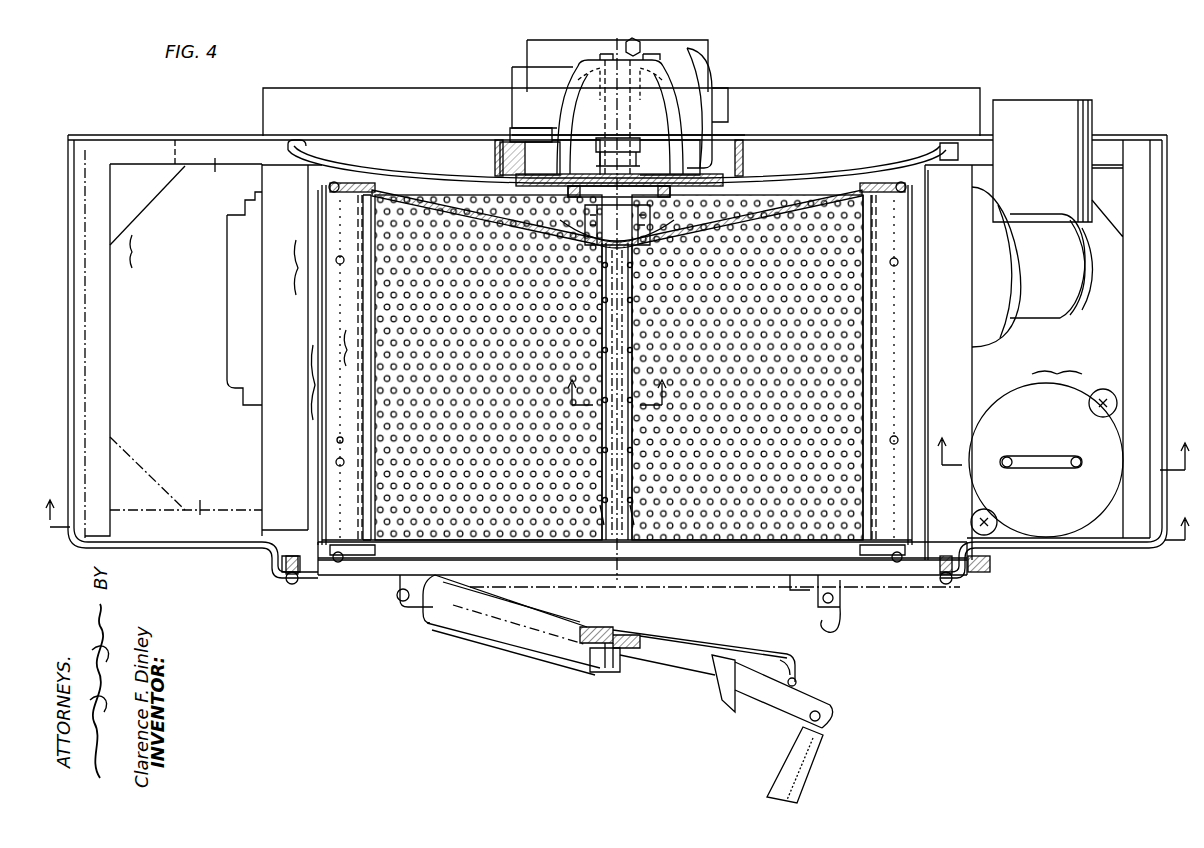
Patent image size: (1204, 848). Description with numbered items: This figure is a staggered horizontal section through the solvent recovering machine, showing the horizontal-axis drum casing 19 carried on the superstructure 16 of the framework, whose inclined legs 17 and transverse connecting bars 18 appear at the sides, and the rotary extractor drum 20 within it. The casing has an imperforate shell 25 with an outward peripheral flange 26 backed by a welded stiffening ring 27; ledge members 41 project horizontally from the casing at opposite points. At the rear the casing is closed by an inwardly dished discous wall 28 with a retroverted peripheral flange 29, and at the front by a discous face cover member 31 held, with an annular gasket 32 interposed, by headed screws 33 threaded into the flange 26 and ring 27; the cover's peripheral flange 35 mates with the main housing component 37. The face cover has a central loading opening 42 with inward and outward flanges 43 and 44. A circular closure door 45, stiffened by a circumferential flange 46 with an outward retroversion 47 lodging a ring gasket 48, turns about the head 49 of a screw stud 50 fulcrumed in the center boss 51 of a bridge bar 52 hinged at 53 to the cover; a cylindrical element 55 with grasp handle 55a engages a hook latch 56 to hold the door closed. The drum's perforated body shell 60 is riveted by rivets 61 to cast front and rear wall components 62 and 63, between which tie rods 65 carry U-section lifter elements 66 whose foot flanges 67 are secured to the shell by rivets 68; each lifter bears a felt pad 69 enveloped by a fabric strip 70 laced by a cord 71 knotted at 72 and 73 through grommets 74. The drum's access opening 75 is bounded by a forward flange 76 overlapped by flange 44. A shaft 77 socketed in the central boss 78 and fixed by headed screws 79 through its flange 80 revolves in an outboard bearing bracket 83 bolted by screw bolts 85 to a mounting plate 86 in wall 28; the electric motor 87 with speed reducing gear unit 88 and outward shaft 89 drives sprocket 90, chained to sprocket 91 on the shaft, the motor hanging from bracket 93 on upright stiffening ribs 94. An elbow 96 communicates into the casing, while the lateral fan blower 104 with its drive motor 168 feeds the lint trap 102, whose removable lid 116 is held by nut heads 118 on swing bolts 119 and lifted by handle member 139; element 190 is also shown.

The superstructure 16 is at (146, 251).
The inclined legs 17 is at (208, 336).
The transverse connecting bars 18 is at (110, 363).
The drum casing 19 is at (284, 267).
The rotary extractor drum 20 is at (306, 386).
The imperforate shell 25 is at (316, 336).
The peripheral flange 26 is at (272, 578).
The stiffening ring 27 is at (284, 555).
The dished discous wall 28 is at (814, 173).
The retroverted peripheral flange 29 is at (958, 153).
The face cover member 31 is at (338, 580).
The annular gasket 32 is at (298, 580).
The headed screws 33 is at (288, 583).
The peripheral flange 35 is at (982, 571).
The main component of machine housing 37 is at (68, 364).
The ledge members 41 is at (268, 438).
The central opening 42 is at (760, 588).
The inwardly projecting peripheral flange 43 is at (795, 566).
The outwardly projecting peripheral flange 44 is at (796, 590).
The closure door 45 is at (705, 638).
The circumferential flange 46 is at (796, 670).
The outward retroversion 47 is at (800, 684).
The ring gasket 48 is at (800, 676).
The head of screw stud 49 is at (612, 628).
The screw stud 50 is at (600, 668).
The center boss 51 is at (622, 672).
The bridge bar 52 is at (511, 632).
The hinge connection 53 is at (398, 610).
The cylindrical element 55 is at (832, 710).
The actuating grasp handle 55a is at (812, 769).
The hook latch 56 is at (843, 620).
The cylindric body shell 60 is at (320, 214).
The rivets 61 is at (330, 191).
The front wall component 62 is at (400, 538).
The rear wall component 63 is at (617, 367).
The tie rods 65 is at (365, 321).
The lifter elements 66 is at (590, 360).
The foot flanges 67 is at (362, 471).
The rivets 68 is at (336, 462).
The pad 69 is at (362, 321).
The covering fabric strip 70 is at (870, 307).
The lacing cord 71 is at (880, 411).
The knot 72 is at (890, 209).
The knot 73 is at (368, 536).
The grommets 74 is at (892, 263).
The access opening 75 is at (720, 540).
The forwardly projecting peripheral flange 76 is at (810, 540).
The shaft 77 is at (628, 104).
The central boss 78 is at (640, 245).
The headed screws 79 is at (618, 240).
The flange 80 is at (721, 238).
The outboard bearing bracket 83 is at (566, 101).
The screw bolts 85 is at (560, 197).
The mounting plate 86 is at (540, 231).
The electric motor 87 is at (700, 72).
The speed reducing gear unit 88 is at (514, 74).
The outward shaft 89 is at (548, 126).
The sprocket 90 is at (600, 157).
The sprocket 91 is at (625, 140).
The bracket 93 is at (533, 52).
The upright stiffening ribs 94 is at (491, 163).
The elbow 96 is at (236, 298).
The lint trap 102 is at (1057, 360).
The lateral fan blower 104 is at (996, 267).
The removable lid 116 is at (1046, 460).
The nut heads 118 is at (1103, 389).
The swing bolts 119 is at (1095, 409).
The handle member 139 is at (1042, 455).
The drive motor 168 is at (1051, 266).
The control box 190 is at (1042, 161).